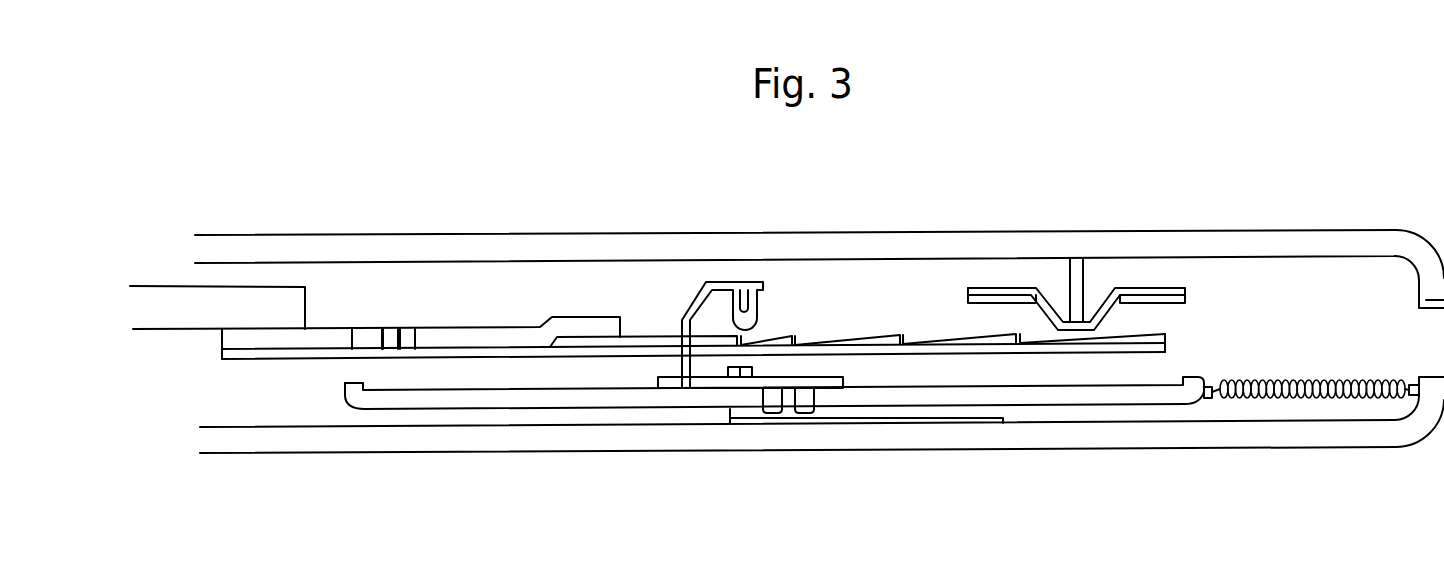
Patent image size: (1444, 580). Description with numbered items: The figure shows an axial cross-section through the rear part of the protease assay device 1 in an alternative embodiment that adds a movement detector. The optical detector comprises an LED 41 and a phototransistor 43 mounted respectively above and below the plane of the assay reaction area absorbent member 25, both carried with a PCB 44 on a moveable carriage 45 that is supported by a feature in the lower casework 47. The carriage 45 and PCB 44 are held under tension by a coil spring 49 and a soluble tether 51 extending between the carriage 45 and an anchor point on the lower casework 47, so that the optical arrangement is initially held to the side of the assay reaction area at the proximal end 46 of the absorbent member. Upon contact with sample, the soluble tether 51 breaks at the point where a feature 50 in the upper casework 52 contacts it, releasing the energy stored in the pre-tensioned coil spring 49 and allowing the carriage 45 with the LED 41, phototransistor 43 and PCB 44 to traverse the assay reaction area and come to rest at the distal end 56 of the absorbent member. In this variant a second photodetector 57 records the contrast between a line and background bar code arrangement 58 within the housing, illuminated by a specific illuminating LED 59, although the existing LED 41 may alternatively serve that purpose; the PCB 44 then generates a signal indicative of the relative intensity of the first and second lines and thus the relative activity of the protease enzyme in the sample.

The card connector 1 is at (607, 157).
The absorbent member 25 is at (915, 333).
The LED 41 is at (744, 281).
The phototransistor 43 is at (733, 375).
The PCB 44 is at (665, 388).
The moveable carriage 45 is at (495, 400).
The proximal end 46 is at (650, 336).
The lower casework 47 is at (410, 437).
The coil spring 49 is at (1297, 397).
The feature 50 is at (1069, 285).
The soluble tether 51 is at (998, 288).
The upper casework 52 is at (1279, 250).
The distal end of absorbent member 56 is at (1017, 337).
The second photodetector 57 is at (805, 410).
The bar code arrangement 58 is at (870, 420).
The illuminating LED 59 is at (773, 412).